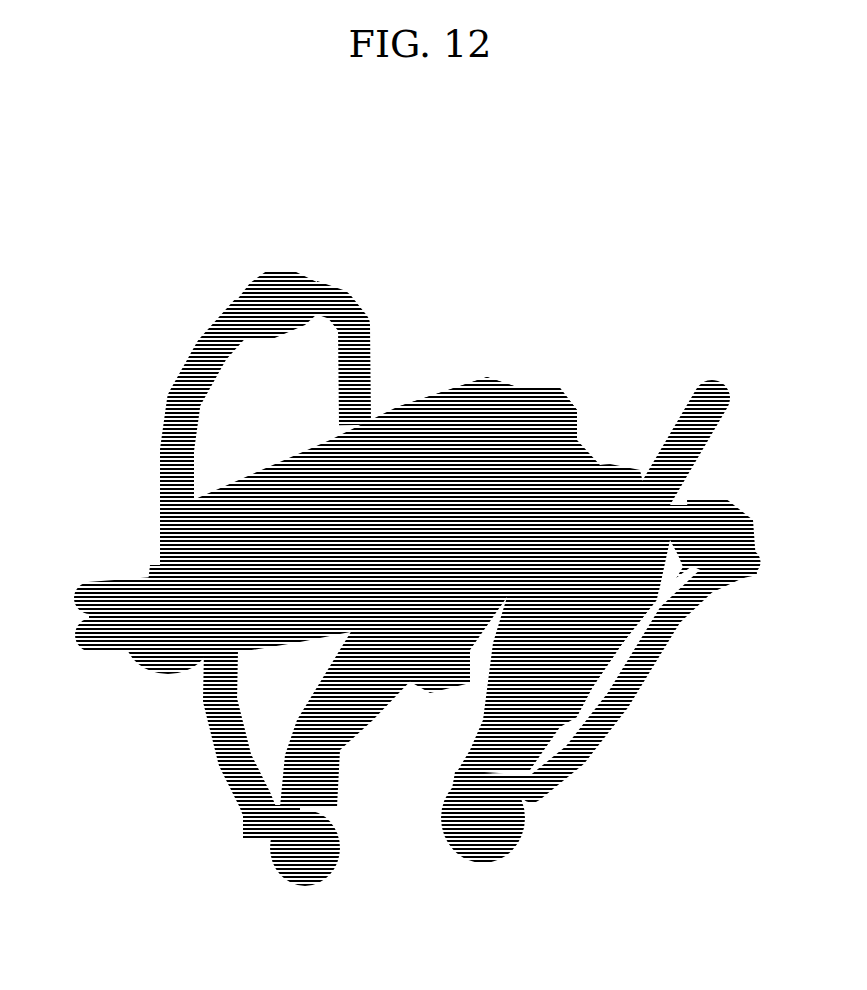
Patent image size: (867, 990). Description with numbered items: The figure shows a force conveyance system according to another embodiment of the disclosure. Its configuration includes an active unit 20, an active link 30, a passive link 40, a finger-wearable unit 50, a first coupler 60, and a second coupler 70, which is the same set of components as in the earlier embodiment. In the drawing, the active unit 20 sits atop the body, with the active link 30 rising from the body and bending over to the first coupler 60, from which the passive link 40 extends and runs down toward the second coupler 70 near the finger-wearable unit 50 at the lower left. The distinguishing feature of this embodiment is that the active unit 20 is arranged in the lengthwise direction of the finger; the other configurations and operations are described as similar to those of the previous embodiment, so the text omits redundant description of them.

The active unit 20 is at (487, 383).
The active link 30 is at (376, 320).
The passive link 40 is at (150, 383).
The finger-wearable unit 50 is at (167, 675).
The first coupler 60 is at (310, 268).
The second coupler 70 is at (148, 578).